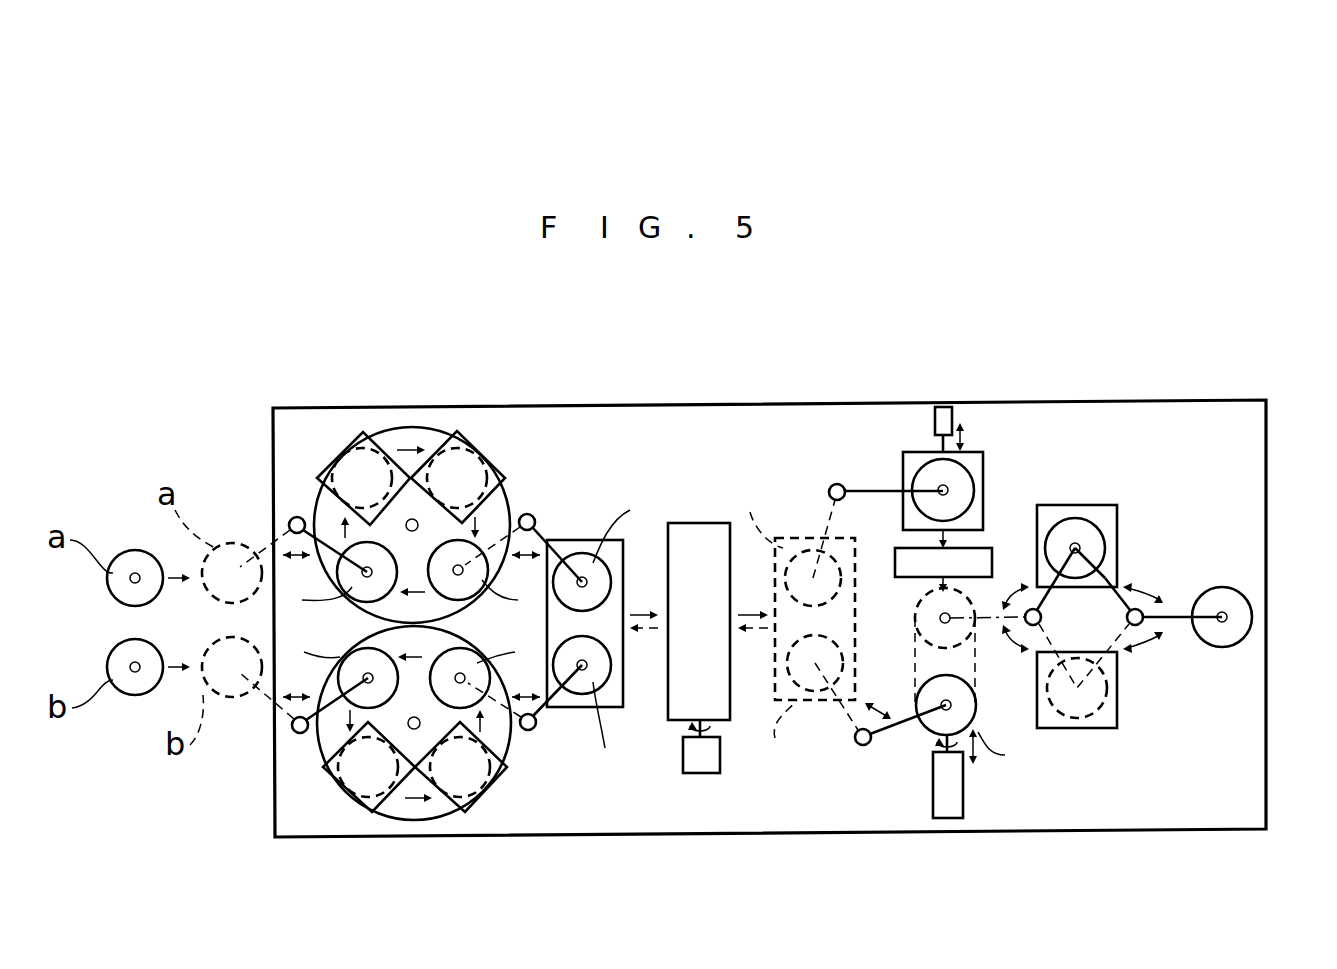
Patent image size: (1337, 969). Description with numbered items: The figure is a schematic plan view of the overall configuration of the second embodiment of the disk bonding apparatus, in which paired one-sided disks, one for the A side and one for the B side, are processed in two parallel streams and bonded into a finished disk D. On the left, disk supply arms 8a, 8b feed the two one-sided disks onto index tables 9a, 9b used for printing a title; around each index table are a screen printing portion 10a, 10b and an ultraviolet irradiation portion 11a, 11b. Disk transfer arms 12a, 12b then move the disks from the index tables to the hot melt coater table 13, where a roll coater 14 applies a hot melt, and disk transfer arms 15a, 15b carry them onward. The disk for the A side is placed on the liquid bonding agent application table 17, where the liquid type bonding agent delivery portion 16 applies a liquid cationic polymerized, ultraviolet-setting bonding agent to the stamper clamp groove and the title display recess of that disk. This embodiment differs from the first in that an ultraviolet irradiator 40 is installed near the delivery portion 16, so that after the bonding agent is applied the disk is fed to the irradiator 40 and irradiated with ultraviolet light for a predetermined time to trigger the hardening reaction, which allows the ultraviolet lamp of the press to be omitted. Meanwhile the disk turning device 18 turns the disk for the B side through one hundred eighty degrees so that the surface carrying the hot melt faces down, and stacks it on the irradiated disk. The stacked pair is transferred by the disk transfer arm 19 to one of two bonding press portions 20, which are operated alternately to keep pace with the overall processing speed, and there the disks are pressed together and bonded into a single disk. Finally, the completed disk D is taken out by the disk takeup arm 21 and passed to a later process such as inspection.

The disk supply arm 8a is at (293, 518).
The disk supply arm 8b is at (293, 733).
The index table for printing a title 9a is at (405, 428).
The index table for printing a title 9b is at (405, 822).
The screen printing portion 10a is at (353, 433).
The screen printing portion 10b is at (370, 812).
The ultraviolet irradiation portion 11a is at (470, 433).
The ultraviolet irradiation portion 11b is at (463, 812).
The disk transfer arm 12a is at (528, 514).
The disk transfer arm 12b is at (528, 730).
The hot melt coater table 13 is at (592, 540).
The roll coater 14 is at (688, 523).
The disk transfer arm 15a is at (837, 484).
The disk transfer arm 15b is at (863, 745).
The liquid type bonding agent delivery portion 16 is at (932, 407).
The liquid bonding agent application table 17 is at (968, 452).
The disk turning device 18 is at (949, 818).
The disk transfer arm 19 is at (1105, 578).
The bonding press portion 20 is at (1088, 505).
The disk takeup arm 21 is at (1045, 612).
The ultraviolet irradiator 40 is at (995, 548).
The finished disk D is at (1252, 622).